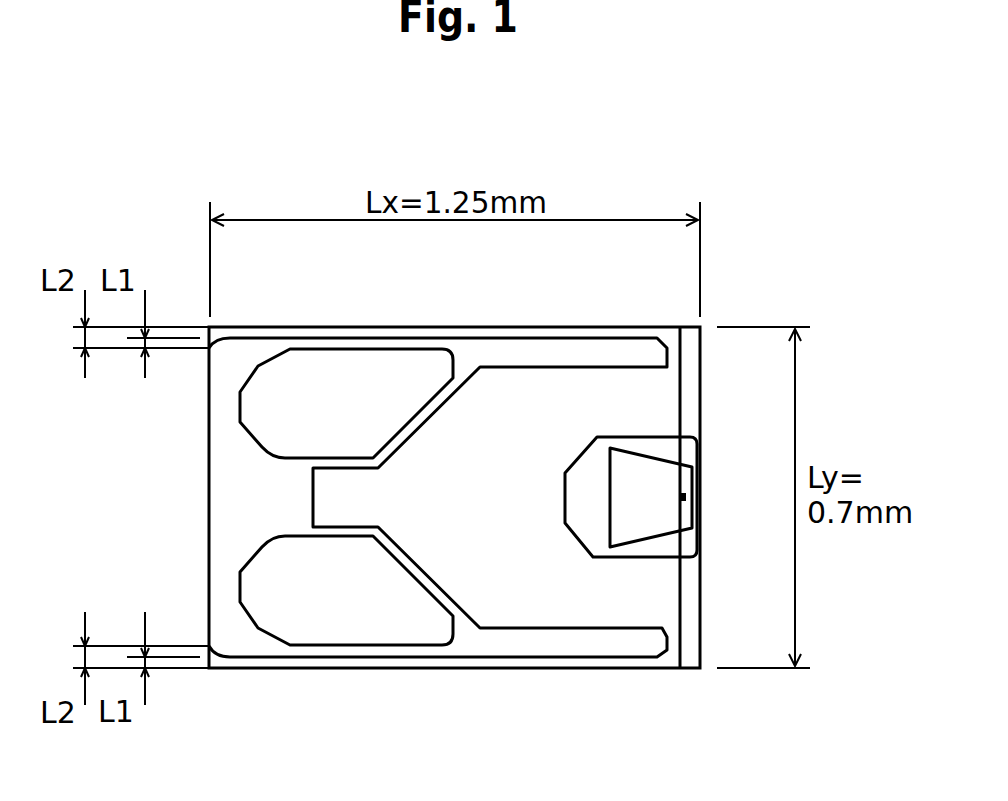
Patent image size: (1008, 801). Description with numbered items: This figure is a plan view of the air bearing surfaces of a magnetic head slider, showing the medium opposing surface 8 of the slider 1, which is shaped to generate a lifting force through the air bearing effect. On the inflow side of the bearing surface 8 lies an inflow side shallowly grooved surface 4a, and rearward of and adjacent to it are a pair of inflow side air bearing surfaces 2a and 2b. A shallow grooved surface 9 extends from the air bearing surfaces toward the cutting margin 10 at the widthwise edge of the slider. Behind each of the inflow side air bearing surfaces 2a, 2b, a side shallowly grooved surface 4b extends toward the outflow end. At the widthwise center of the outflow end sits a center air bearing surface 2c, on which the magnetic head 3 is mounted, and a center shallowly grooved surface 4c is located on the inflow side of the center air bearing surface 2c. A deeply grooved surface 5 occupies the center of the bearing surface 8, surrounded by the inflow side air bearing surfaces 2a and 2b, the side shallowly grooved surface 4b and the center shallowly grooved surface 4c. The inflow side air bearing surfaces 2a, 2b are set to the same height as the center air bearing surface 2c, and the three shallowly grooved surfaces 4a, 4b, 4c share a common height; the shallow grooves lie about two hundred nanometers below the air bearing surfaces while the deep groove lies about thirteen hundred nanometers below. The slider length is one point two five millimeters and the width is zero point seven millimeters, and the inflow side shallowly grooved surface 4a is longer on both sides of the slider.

The slider 1 is at (209, 472).
The inflow side air bearing surface 2a is at (288, 418).
The inflow side air bearing surface 2b is at (288, 582).
The center air bearing surface 2c is at (647, 473).
The magnetic head 3 is at (686, 497).
The inflow side shallowly grooved surface 4a is at (245, 532).
The side shallowly grooved surface 4b is at (503, 338).
The center shallowly grooved surface 4c is at (595, 523).
The deeply grooved surface 5 is at (517, 470).
The medium opposing surface 8 is at (345, 628).
The shallow grooved surface 9 is at (305, 338).
The cutting margin 10 is at (395, 338).